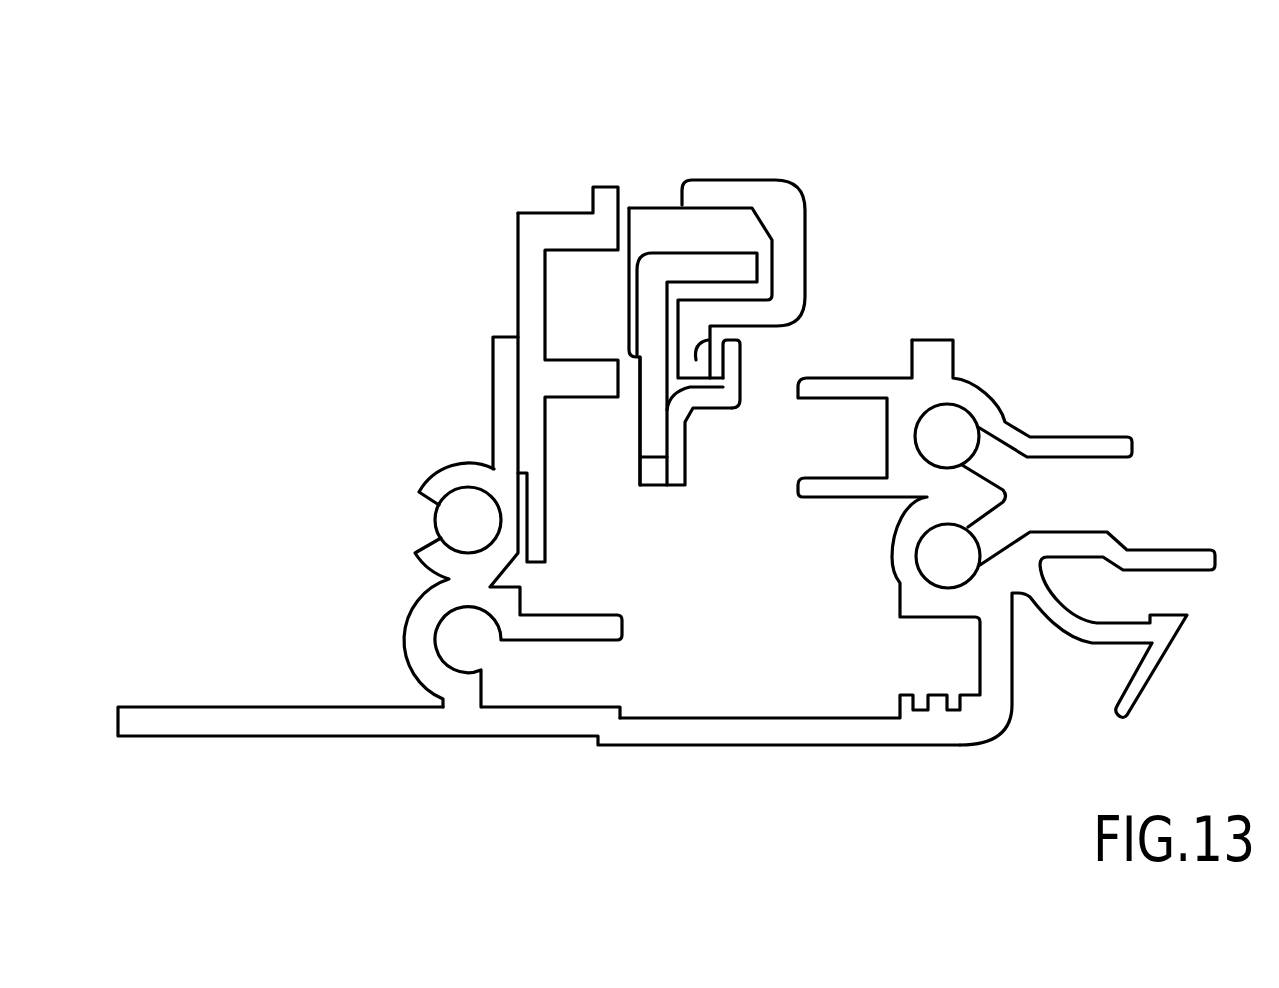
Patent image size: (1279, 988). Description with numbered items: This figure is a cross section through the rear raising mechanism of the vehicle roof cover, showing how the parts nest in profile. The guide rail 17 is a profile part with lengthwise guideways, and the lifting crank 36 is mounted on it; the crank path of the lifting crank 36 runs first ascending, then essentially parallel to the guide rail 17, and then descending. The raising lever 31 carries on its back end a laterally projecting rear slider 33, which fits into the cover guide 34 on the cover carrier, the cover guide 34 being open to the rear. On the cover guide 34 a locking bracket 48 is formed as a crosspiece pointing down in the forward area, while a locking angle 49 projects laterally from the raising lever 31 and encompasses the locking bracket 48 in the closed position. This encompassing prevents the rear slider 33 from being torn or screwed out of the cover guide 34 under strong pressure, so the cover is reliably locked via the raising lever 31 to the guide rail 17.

The guide rail 17 is at (563, 742).
The raising lever 31 is at (650, 427).
The rear slider 33 is at (653, 206).
The cover guide 34 is at (805, 258).
The lifting crank 36 is at (525, 278).
The locking bracket 48 is at (697, 333).
The locking angle 49 is at (752, 367).